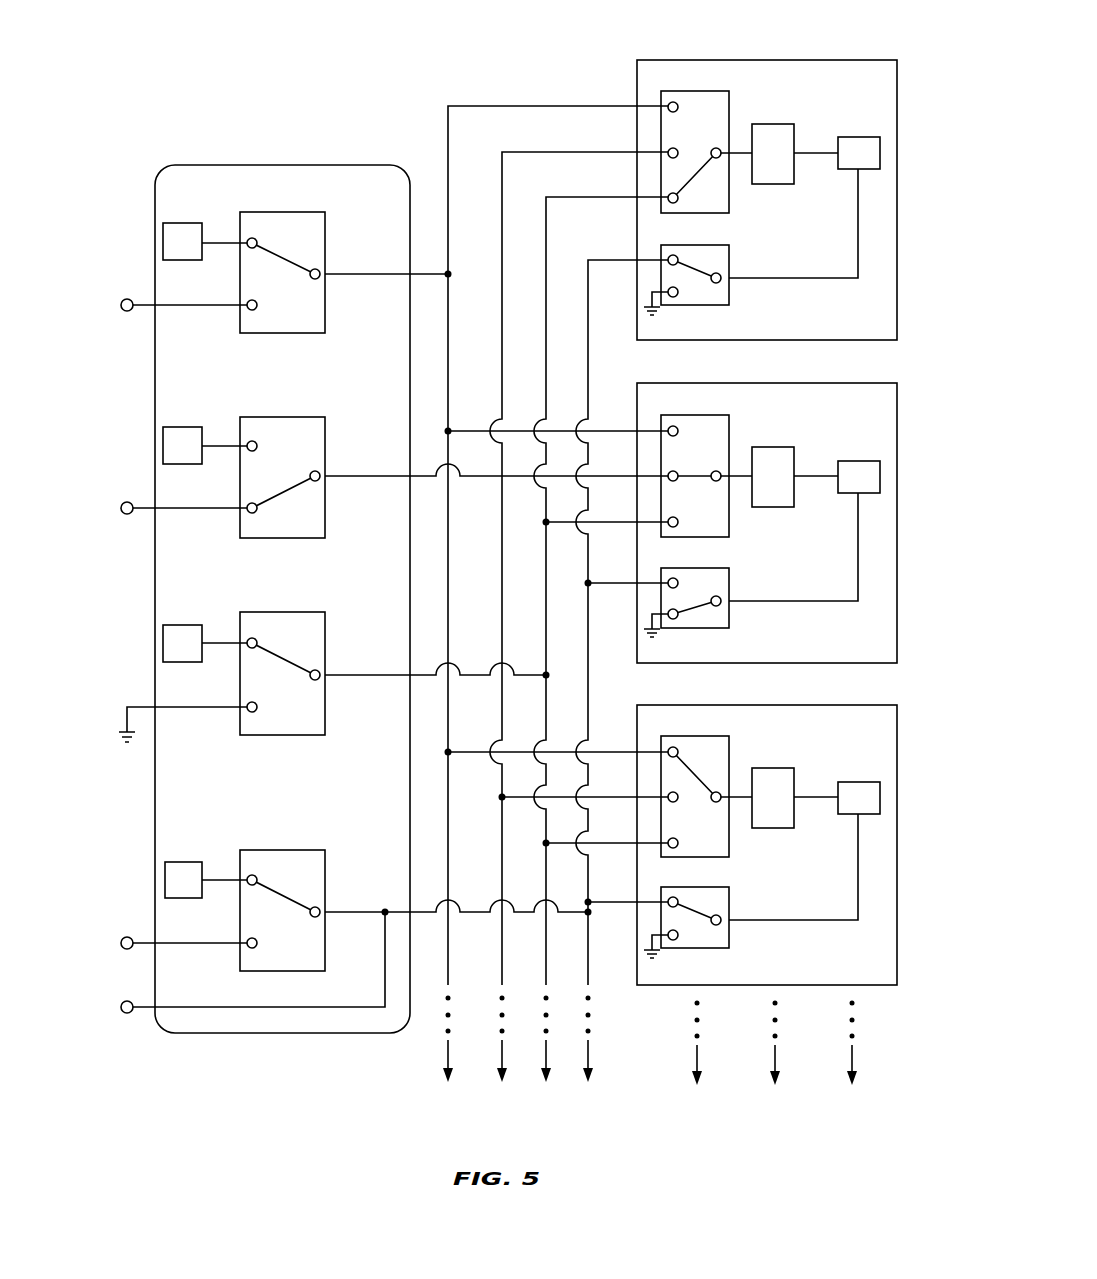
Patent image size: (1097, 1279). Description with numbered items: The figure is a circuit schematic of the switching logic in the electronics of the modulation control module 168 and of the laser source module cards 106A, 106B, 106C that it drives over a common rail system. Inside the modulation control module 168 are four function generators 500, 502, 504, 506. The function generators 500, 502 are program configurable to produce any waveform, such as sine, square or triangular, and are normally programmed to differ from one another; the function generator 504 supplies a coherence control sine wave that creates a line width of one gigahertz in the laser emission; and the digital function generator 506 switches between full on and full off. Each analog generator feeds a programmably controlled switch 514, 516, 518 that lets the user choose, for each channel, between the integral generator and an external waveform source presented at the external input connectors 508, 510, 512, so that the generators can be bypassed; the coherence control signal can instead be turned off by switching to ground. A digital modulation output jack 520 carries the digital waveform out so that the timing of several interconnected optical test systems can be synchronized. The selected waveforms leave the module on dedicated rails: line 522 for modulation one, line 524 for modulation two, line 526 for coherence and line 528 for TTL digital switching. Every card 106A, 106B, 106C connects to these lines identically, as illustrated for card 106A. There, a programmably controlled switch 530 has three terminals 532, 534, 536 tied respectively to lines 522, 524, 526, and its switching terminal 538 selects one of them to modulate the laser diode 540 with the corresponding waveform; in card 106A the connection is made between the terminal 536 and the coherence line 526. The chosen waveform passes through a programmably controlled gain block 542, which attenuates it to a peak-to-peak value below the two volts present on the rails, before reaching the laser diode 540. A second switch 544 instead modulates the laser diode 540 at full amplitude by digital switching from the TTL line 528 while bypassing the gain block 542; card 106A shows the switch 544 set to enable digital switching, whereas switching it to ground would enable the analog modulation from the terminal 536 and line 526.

The modulation control module 168 is at (322, 167).
The function generator 500 is at (176, 223).
The function generator 502 is at (180, 427).
The function generator 504 is at (180, 662).
The digital function generator 506 is at (192, 898).
The external input 1 connector 508 is at (130, 315).
The external input 2 connector 510 is at (129, 517).
The external digital input connector 512 is at (136, 950).
The programmably controlled switch 514 is at (325, 220).
The programmably controlled switch 516 is at (325, 417).
The programmably controlled switch 518 is at (325, 858).
The digital modulation output jack 520 is at (127, 1000).
The line 522 is at (456, 106).
The line 524 is at (535, 152).
The line 526 is at (582, 197).
The line 528 is at (610, 260).
The switch 1 of laser module 530 is at (683, 138).
The terminal 532 is at (670, 113).
The terminal 534 is at (685, 148).
The terminal 536 is at (676, 205).
The switch 1 output terminal 538 is at (716, 160).
The laser diode 540 is at (847, 170).
The programmably controlled gain block 542 is at (795, 125).
The second switch 544 is at (729, 262).
The laser source module card 106A is at (741, 547).
The laser source module card 106B is at (812, 383).
The laser source module card 106C is at (805, 705).